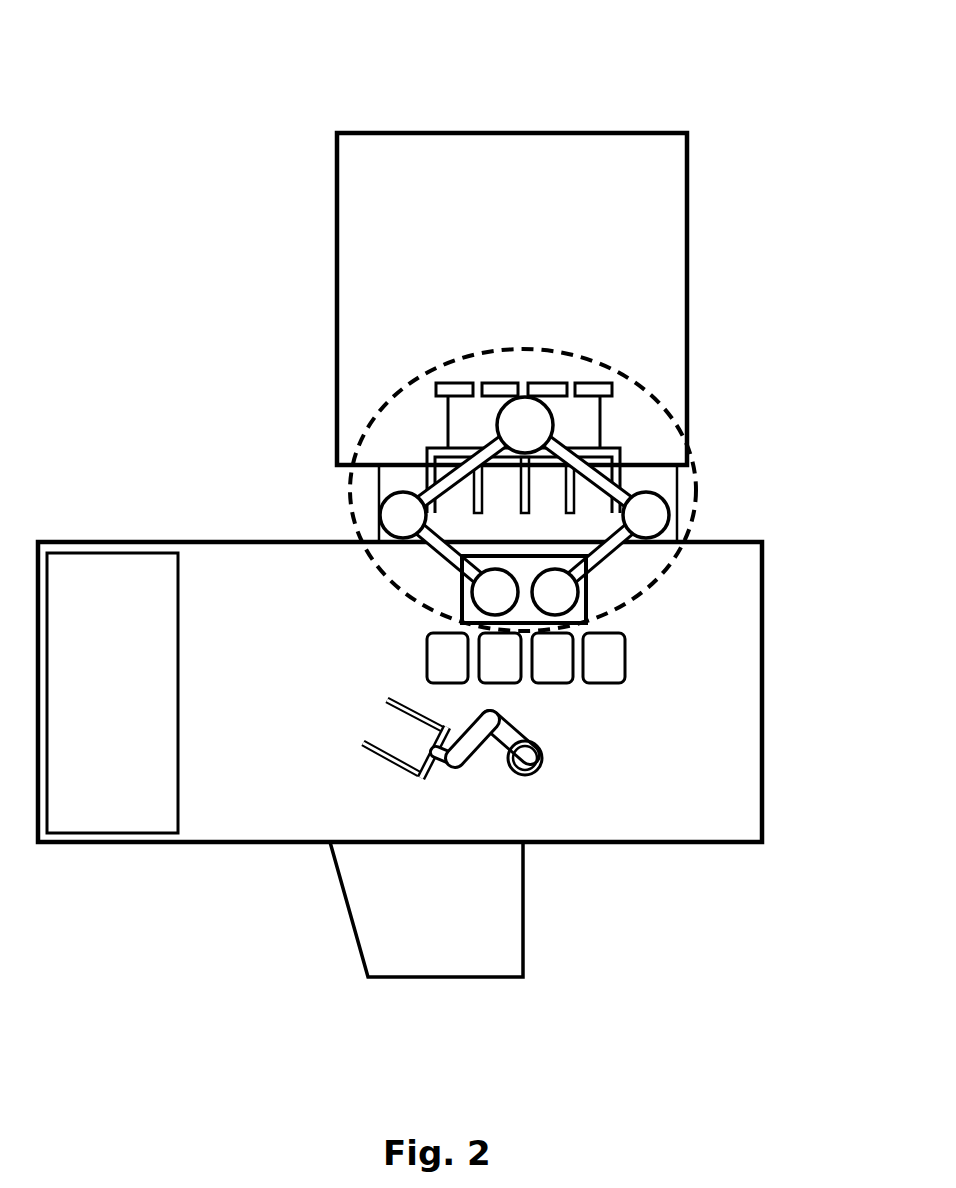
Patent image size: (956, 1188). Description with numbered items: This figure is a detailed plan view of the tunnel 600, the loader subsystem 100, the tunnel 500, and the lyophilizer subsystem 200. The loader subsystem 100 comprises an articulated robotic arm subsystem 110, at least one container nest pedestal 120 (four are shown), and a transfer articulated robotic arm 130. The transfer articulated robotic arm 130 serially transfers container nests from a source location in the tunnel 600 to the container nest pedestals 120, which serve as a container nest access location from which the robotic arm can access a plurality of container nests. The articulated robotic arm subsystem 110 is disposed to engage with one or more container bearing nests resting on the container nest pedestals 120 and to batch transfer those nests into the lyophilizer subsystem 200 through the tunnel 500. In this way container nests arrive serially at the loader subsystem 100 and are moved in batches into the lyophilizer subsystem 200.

The lyophilizer subsystem 200 is at (627, 158).
The articulated robotic arm subsystem 110 is at (603, 368).
The tunnel 500 is at (392, 477).
The loader subsystem 100 is at (700, 557).
The container nest pedestal 120 is at (617, 661).
The transfer articulated robotic arm 130 is at (510, 752).
The tunnel 600 is at (352, 870).